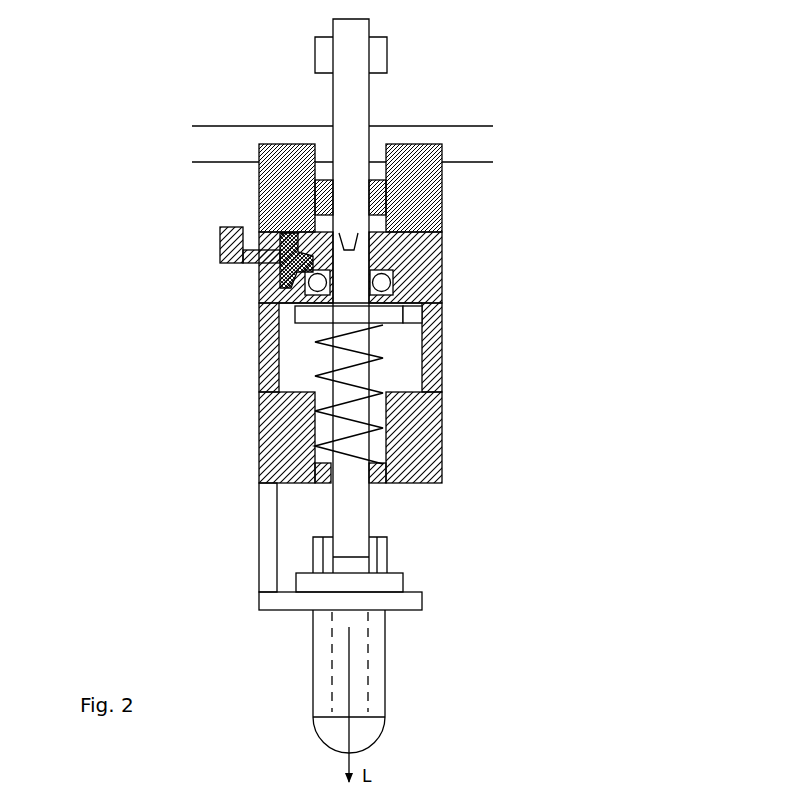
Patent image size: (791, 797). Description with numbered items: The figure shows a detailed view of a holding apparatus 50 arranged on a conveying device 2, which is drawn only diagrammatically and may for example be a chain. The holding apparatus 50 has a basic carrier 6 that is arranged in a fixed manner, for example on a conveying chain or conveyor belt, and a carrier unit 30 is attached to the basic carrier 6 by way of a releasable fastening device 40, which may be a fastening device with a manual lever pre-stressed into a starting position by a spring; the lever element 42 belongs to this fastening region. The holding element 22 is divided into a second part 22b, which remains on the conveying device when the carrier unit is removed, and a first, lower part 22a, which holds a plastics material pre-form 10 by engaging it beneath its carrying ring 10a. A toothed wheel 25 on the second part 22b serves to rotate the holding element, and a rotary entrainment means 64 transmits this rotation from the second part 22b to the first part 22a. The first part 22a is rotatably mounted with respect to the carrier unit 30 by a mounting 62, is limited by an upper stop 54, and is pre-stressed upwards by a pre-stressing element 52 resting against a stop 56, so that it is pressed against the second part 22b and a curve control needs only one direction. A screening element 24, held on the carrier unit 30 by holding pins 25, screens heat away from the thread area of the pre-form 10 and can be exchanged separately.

The conveying device 2 is at (473, 142).
The basic carrier 6 is at (433, 195).
The plastics material pre-form 10 is at (362, 648).
The carrying ring 10a is at (383, 583).
The holding element 22 is at (413, 362).
The first part of the holding element 22a is at (362, 517).
The second part of the holding element 22b is at (350, 98).
The screening element 24 is at (303, 602).
The toothed wheel / holding pins 25 is at (377, 50).
The carrier unit 30 is at (242, 370).
The releasable fastening device 40 is at (198, 242).
The locking lever 42 is at (227, 263).
The holding apparatus 50 is at (587, 343).
The pre-stressing element 52 is at (385, 417).
The upper stop 54 is at (390, 316).
The stop 56 is at (442, 483).
The mounting 62 is at (442, 282).
The rotary entrainment means 64 is at (258, 227).